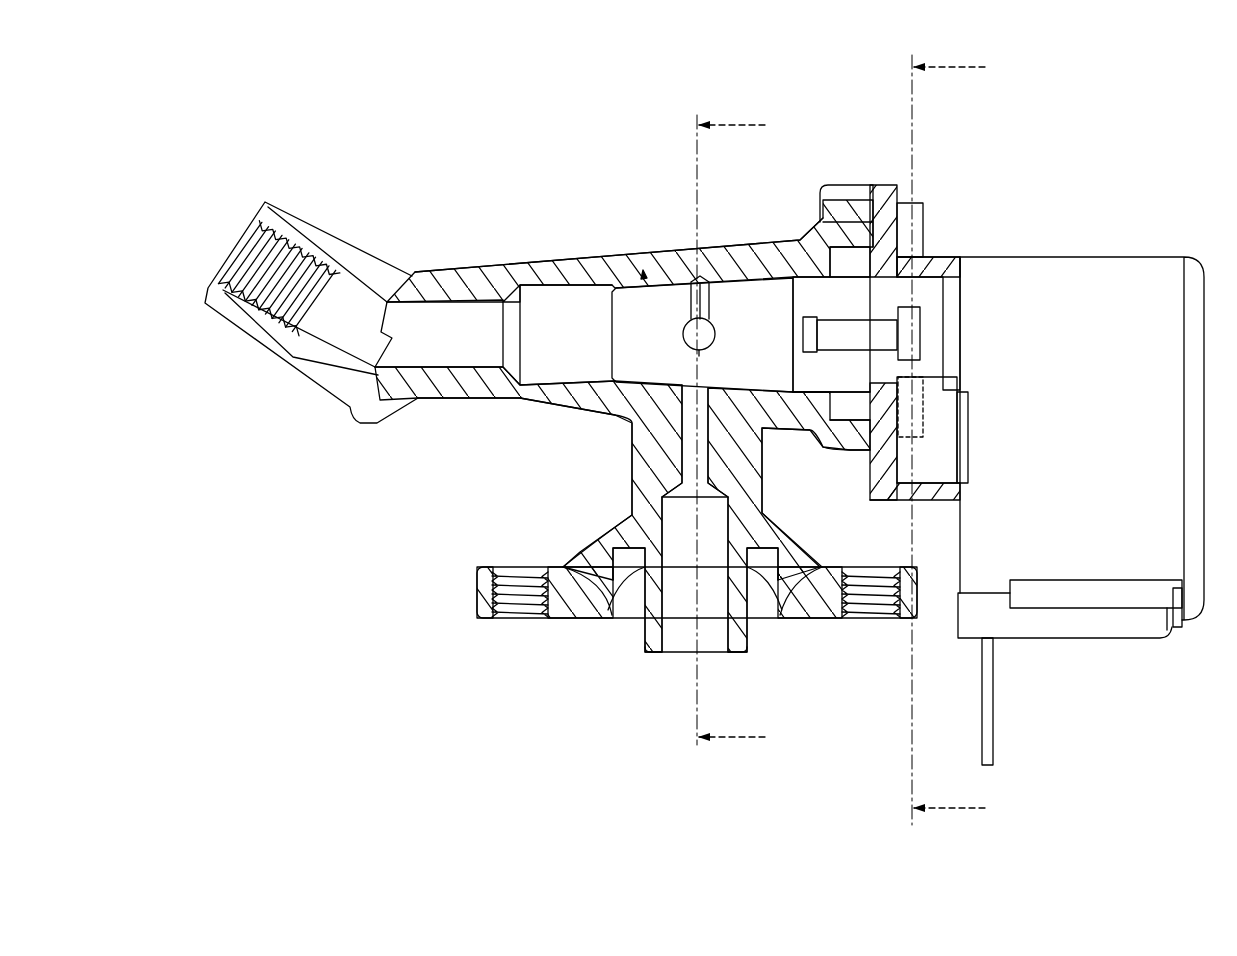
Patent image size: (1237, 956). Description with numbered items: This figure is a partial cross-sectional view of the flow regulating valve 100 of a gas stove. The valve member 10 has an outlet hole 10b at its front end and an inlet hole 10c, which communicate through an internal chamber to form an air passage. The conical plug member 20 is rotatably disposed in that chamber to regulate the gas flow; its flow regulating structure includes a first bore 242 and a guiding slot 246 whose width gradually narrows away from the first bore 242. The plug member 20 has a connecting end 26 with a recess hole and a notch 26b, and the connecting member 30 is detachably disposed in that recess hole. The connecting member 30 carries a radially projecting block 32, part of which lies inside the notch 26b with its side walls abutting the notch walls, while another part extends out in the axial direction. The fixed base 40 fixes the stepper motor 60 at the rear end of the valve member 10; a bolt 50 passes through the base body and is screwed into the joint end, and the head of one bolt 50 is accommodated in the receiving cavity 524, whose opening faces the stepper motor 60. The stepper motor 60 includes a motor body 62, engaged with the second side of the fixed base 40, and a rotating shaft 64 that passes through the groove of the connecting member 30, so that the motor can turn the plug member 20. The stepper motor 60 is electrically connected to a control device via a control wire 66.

The flow regulating valve 100 is at (1085, 130).
The valve member 10 is at (338, 222).
The outlet hole 10b is at (225, 232).
The inlet hole 10c is at (687, 633).
The plug member 20 is at (647, 288).
The first bore 242 is at (713, 330).
The guiding slot 246 is at (676, 285).
The connecting end 26 is at (813, 297).
The notch 26b is at (817, 343).
The block 32 is at (835, 337).
The fixed base 40 is at (847, 183).
The connecting member 30 is at (882, 310).
The bolt 50 is at (923, 213).
The rotating shaft 64 is at (930, 320).
The motor body 62 is at (1035, 275).
The stepper motor 60 is at (1145, 255).
The receiving cavity 524 is at (938, 463).
The control wire 66 is at (985, 700).